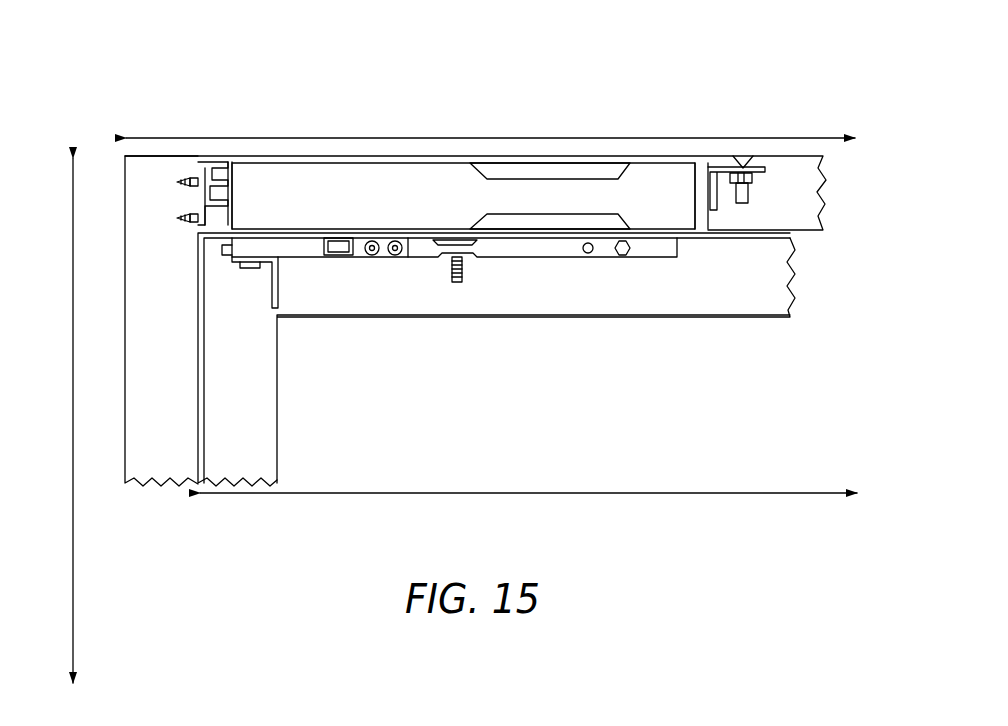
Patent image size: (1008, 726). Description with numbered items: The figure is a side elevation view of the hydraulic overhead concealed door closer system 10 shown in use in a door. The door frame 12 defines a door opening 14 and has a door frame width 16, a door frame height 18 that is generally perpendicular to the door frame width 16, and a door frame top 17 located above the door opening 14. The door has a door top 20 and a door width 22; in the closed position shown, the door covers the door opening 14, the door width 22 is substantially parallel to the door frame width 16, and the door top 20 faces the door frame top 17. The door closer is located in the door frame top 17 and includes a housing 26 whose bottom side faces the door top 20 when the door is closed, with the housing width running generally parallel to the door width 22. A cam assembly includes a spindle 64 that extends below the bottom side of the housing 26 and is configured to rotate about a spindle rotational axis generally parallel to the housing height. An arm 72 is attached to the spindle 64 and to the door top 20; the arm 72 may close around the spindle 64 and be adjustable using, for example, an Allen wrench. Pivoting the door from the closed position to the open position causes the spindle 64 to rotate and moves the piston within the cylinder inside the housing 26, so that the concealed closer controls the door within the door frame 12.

The hydraulic overhead concealed door closer system 10 is at (150, 113).
The door frame 12 is at (125, 200).
The door opening 14 is at (810, 243).
The door frame width 16 is at (375, 138).
The door frame top 17 is at (808, 193).
The door frame height 18 is at (72, 250).
The door top 20 is at (773, 246).
The door width 22 is at (380, 490).
The housing 26 is at (455, 187).
The spindle 64 is at (337, 255).
The arm 72 is at (491, 243).